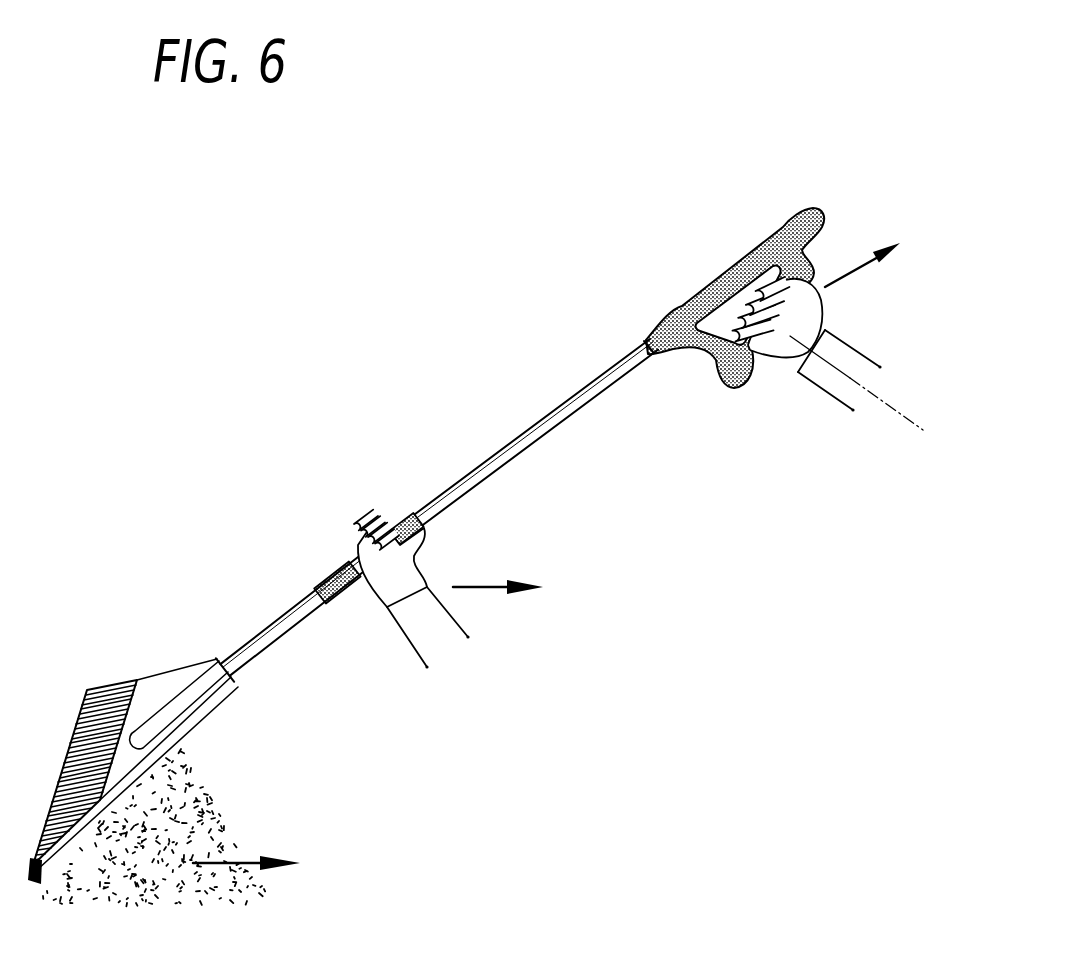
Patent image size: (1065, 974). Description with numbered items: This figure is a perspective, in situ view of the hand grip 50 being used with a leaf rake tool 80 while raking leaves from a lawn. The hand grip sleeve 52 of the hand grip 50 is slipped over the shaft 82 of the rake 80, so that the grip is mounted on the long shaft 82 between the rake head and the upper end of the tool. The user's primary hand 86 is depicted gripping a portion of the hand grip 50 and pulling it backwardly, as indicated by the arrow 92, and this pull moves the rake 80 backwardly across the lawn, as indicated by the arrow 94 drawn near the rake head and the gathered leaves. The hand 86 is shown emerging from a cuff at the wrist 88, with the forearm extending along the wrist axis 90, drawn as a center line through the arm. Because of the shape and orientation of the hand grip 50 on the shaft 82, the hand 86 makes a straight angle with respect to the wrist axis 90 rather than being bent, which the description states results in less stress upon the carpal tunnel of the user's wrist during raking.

The hand grip 50 is at (731, 259).
The hand grip sleeve 52 is at (655, 328).
The leaf rake tool 80 is at (97, 664).
The shaft 82 is at (533, 427).
The primary hand 86 is at (782, 334).
The wrist cuff 88 is at (827, 384).
The wrist axis 90 is at (877, 394).
The arrow 92 is at (858, 263).
The arrow 94 is at (267, 867).